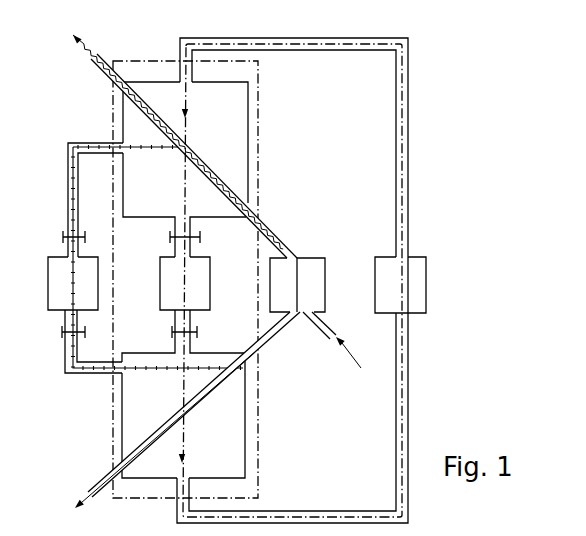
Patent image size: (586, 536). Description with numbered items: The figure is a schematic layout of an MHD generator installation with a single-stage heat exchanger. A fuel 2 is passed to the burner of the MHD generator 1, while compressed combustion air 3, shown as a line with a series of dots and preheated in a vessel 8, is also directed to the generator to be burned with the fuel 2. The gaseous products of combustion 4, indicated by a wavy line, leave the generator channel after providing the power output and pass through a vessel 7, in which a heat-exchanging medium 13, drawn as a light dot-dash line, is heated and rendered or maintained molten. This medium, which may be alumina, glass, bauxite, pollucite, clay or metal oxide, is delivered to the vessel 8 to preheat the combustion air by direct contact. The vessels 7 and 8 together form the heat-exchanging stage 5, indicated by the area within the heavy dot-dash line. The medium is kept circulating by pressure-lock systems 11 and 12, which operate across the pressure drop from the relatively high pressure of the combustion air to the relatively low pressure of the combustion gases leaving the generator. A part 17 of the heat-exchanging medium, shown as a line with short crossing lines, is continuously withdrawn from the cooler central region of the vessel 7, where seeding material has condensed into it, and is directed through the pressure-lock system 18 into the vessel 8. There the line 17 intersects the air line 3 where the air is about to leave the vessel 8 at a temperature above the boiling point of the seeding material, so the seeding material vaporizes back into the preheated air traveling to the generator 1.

The MHD generator 1 is at (309, 257).
The fuel 2 is at (356, 355).
The compressed combustion air 3 is at (88, 498).
The gaseous products of combustion 4 is at (267, 225).
The heat-exchanging stage 5 is at (285, 168).
The vessel 7 is at (250, 106).
The vessel 8 is at (247, 424).
The pressure-lock system 11 is at (210, 289).
The pressure-lock system 12 is at (427, 281).
The heat-exchanging medium 13 is at (188, 101).
The part of the heat-exchanging medium 17 is at (73, 208).
The pressure-lock system 18 is at (48, 276).